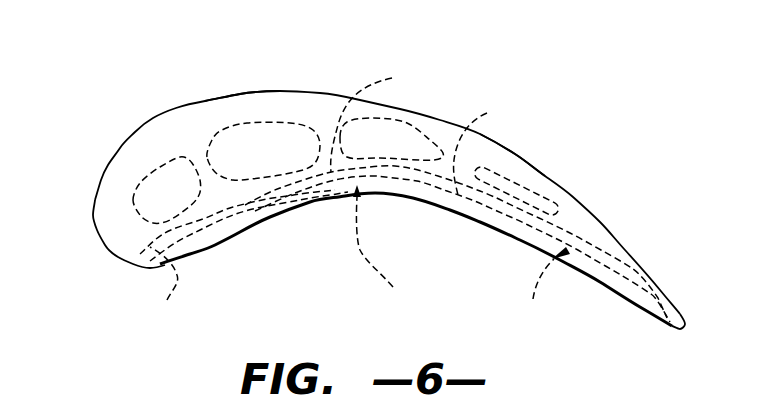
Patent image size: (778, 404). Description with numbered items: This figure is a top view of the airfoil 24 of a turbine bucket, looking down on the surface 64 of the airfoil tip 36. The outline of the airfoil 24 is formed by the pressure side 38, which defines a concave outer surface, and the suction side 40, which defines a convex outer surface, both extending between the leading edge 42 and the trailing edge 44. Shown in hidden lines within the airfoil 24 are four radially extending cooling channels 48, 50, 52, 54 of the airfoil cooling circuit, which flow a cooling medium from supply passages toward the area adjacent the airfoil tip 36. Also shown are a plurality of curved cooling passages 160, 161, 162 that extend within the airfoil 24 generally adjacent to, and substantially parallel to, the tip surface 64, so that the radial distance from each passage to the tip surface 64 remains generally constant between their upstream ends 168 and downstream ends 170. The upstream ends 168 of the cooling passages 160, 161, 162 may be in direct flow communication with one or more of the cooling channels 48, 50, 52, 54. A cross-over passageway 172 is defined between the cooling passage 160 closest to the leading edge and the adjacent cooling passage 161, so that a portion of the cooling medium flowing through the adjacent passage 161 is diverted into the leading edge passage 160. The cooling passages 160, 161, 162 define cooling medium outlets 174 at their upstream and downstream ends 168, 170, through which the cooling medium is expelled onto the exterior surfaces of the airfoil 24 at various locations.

The airfoil 24 is at (382, 177).
The airfoil tip 36 is at (521, 146).
The pressure side 38 is at (503, 235).
The suction side 40 is at (289, 80).
The leading edge 42 is at (104, 240).
The trailing edge 44 is at (688, 327).
The cooling channel 48 is at (181, 203).
The cooling channel 50 is at (274, 165).
The cooling channel 52 is at (386, 157).
The cooling channel 54 is at (541, 198).
The tip surface 64 is at (237, 107).
The curved cooling passage 160 is at (203, 234).
The curved cooling passage 161 is at (393, 249).
The curved cooling passage 162 is at (541, 290).
The upstream end 168 is at (332, 196).
The downstream end 170 is at (228, 215).
The cross-over passageway 172 is at (321, 200).
The cooling medium outlet 174 is at (135, 263).